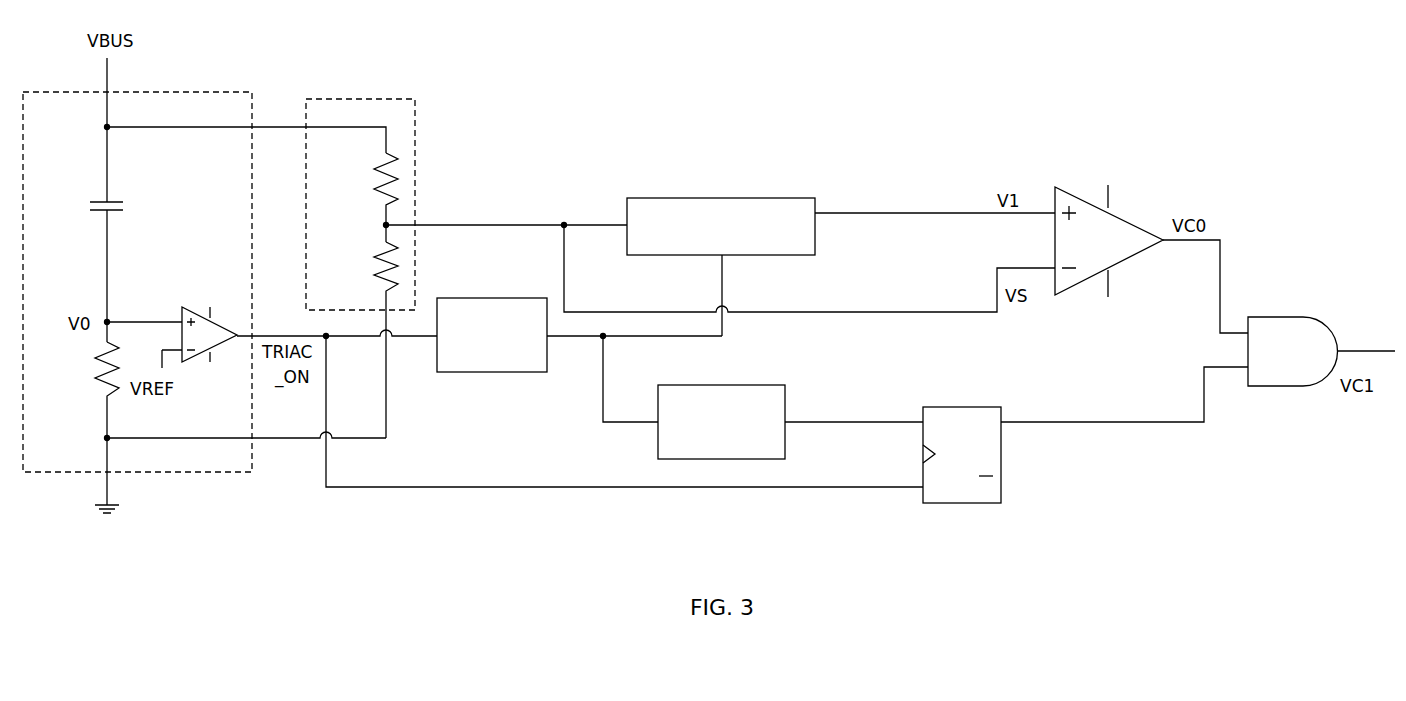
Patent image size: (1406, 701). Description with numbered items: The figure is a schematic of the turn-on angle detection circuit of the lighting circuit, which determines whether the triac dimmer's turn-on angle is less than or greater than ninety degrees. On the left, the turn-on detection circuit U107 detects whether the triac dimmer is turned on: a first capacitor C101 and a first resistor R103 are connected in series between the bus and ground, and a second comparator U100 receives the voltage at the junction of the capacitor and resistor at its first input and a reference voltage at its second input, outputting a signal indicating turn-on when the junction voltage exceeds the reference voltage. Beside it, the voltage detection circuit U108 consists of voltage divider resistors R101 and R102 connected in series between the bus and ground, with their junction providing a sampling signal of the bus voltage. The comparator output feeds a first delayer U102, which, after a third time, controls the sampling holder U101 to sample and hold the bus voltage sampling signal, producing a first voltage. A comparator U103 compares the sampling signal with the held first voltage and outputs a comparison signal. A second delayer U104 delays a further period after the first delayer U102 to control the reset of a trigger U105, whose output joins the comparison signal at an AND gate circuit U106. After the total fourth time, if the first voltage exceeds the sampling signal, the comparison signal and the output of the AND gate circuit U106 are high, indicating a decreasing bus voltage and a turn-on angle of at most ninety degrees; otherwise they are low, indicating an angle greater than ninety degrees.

The turn-on detection circuit U107 is at (213, 110).
The voltage detection circuit U108 is at (403, 110).
The first capacitor C101 is at (128, 207).
The voltage divider resistor R101 is at (361, 181).
The voltage divider resistor R102 is at (362, 269).
The first resistor R103 is at (83, 372).
The second comparator U100 is at (209, 347).
The sampling holder U101 is at (707, 205).
The first delayer U102 is at (458, 302).
The comparator U103 is at (1085, 210).
The second delayer U104 is at (757, 395).
The trigger U105 is at (973, 418).
The AND gate circuit U106 is at (1282, 330).